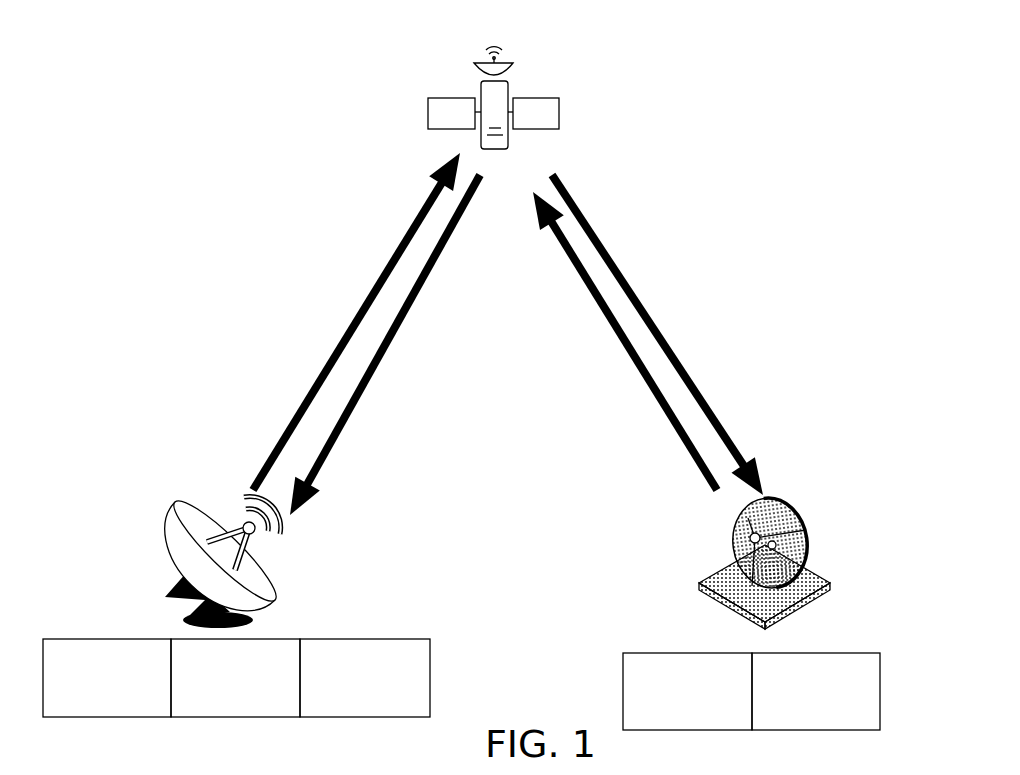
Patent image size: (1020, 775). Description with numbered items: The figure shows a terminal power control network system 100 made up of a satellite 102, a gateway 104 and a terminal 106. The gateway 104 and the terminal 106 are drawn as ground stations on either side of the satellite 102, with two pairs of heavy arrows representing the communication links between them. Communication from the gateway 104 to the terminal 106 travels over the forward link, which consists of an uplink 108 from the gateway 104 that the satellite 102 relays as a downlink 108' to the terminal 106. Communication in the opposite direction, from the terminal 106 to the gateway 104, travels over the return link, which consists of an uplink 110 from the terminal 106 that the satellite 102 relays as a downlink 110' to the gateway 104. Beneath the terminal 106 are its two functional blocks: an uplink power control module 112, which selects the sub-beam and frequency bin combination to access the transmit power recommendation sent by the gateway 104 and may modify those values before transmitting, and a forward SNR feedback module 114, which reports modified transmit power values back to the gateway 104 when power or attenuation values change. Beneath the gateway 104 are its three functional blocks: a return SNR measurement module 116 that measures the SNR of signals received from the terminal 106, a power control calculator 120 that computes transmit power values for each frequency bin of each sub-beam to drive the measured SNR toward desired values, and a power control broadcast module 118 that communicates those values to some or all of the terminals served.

The terminal power control network system 100 is at (732, 75).
The satellite 102 is at (513, 66).
The gateway 104 is at (277, 581).
The terminal 106 is at (808, 531).
The uplink 108 is at (356, 321).
The downlink 108' is at (657, 335).
The uplink 110 is at (625, 341).
The downlink 110' is at (385, 345).
The uplink power control module 112 is at (687, 691).
The forward signal to noise ratio (SNR) feedback module 114 is at (816, 691).
The return SNR measurement module 116 is at (107, 678).
The power control broadcast module 118 is at (235, 678).
The power control calculator 120 is at (365, 678).